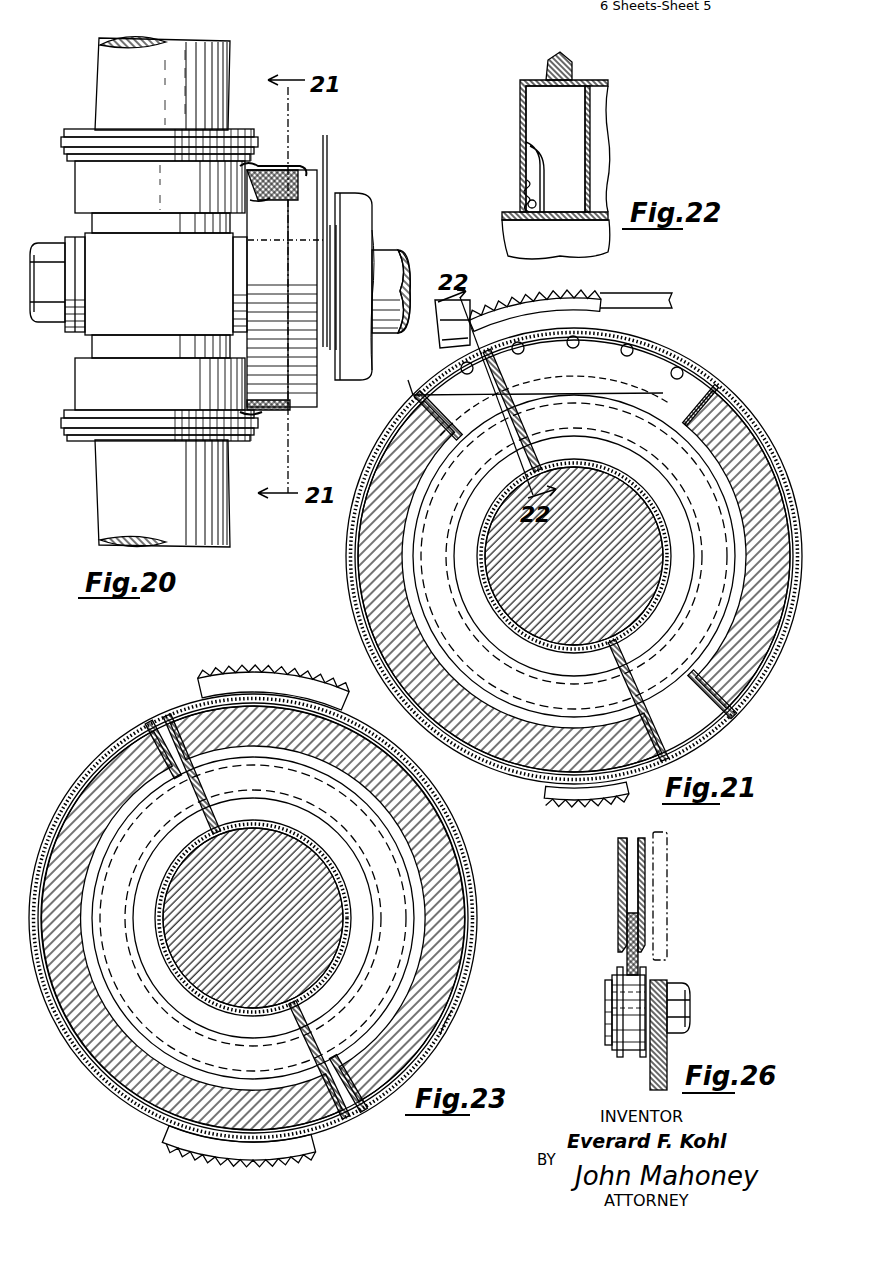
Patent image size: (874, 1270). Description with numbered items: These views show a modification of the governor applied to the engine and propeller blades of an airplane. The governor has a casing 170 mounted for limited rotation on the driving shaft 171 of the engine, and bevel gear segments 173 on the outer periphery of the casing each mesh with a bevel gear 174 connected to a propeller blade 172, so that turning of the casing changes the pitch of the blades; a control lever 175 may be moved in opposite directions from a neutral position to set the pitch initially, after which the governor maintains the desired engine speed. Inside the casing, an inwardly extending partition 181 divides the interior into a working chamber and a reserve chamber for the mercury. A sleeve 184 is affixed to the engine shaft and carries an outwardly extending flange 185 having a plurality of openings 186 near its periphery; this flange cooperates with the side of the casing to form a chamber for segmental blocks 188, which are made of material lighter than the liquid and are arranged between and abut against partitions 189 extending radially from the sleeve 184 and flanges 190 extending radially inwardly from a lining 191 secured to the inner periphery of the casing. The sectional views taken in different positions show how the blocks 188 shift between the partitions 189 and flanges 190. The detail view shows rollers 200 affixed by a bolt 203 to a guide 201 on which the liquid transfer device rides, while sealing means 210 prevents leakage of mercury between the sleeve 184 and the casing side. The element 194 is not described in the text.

In FIG. 20, the casing 170 is at (317, 392).
In FIG. 22, the casing 170 is at (520, 80).
In FIG. 21, the casing 170 is at (760, 430).
In FIG. 23, the casing 170 is at (60, 795).
In FIG. 20, the driving shaft 171 is at (385, 240).
In FIG. 21, the driving shaft 171 is at (610, 560).
In FIG. 23, the driving shaft 171 is at (304, 925).
In FIG. 20, the propeller blade 172 is at (230, 72).
In FIG. 20, the bevel gear segments 173 is at (268, 182).
In FIG. 22, the bevel gear segments 173 is at (562, 56).
In FIG. 21, the bevel gear segments 173 is at (522, 312).
In FIG. 23, the bevel gear segments 173 is at (278, 668).
In FIG. 20, the bevel gear 174 is at (262, 165).
In FIG. 21, the bevel gear 174 is at (578, 300).
In FIG. 20, the control lever 175 is at (335, 148).
In FIG. 26, the partition 181 is at (668, 925).
In FIG. 22, the sleeve 184 is at (540, 222).
In FIG. 21, the sleeve 184 is at (488, 553).
In FIG. 23, the sleeve 184 is at (175, 878).
In FIG. 22, the flange 185 is at (590, 160).
In FIG. 21, the flange 185 is at (455, 378).
In FIG. 22, the openings 186 is at (592, 96).
In FIG. 21, the openings 186 is at (525, 350).
In FIG. 23, the openings 186 is at (452, 1035).
In FIG. 20, the segmental blocks 188 is at (326, 140).
In FIG. 21, the segmental blocks 188 is at (745, 415).
In FIG. 23, the segmental blocks 188 is at (470, 883).
In FIG. 22, the partitions 189 is at (578, 155).
In FIG. 21, the partitions 189 is at (655, 678).
In FIG. 23, the partitions 189 is at (215, 790).
In FIG. 21, the flanges 190 is at (460, 438).
In FIG. 23, the flanges 190 is at (138, 728).
In FIG. 21, the lining 191 is at (352, 606).
In FIG. 23, the lining 191 is at (440, 816).
In FIG. 20, the flange 194 is at (340, 192).
In FIG. 26, the rollers 200 is at (650, 970).
In FIG. 26, the guides 201 is at (649, 1075).
In FIG. 26, the bolt 203 is at (606, 1022).
In FIG. 22, the sealing means 210 is at (525, 195).